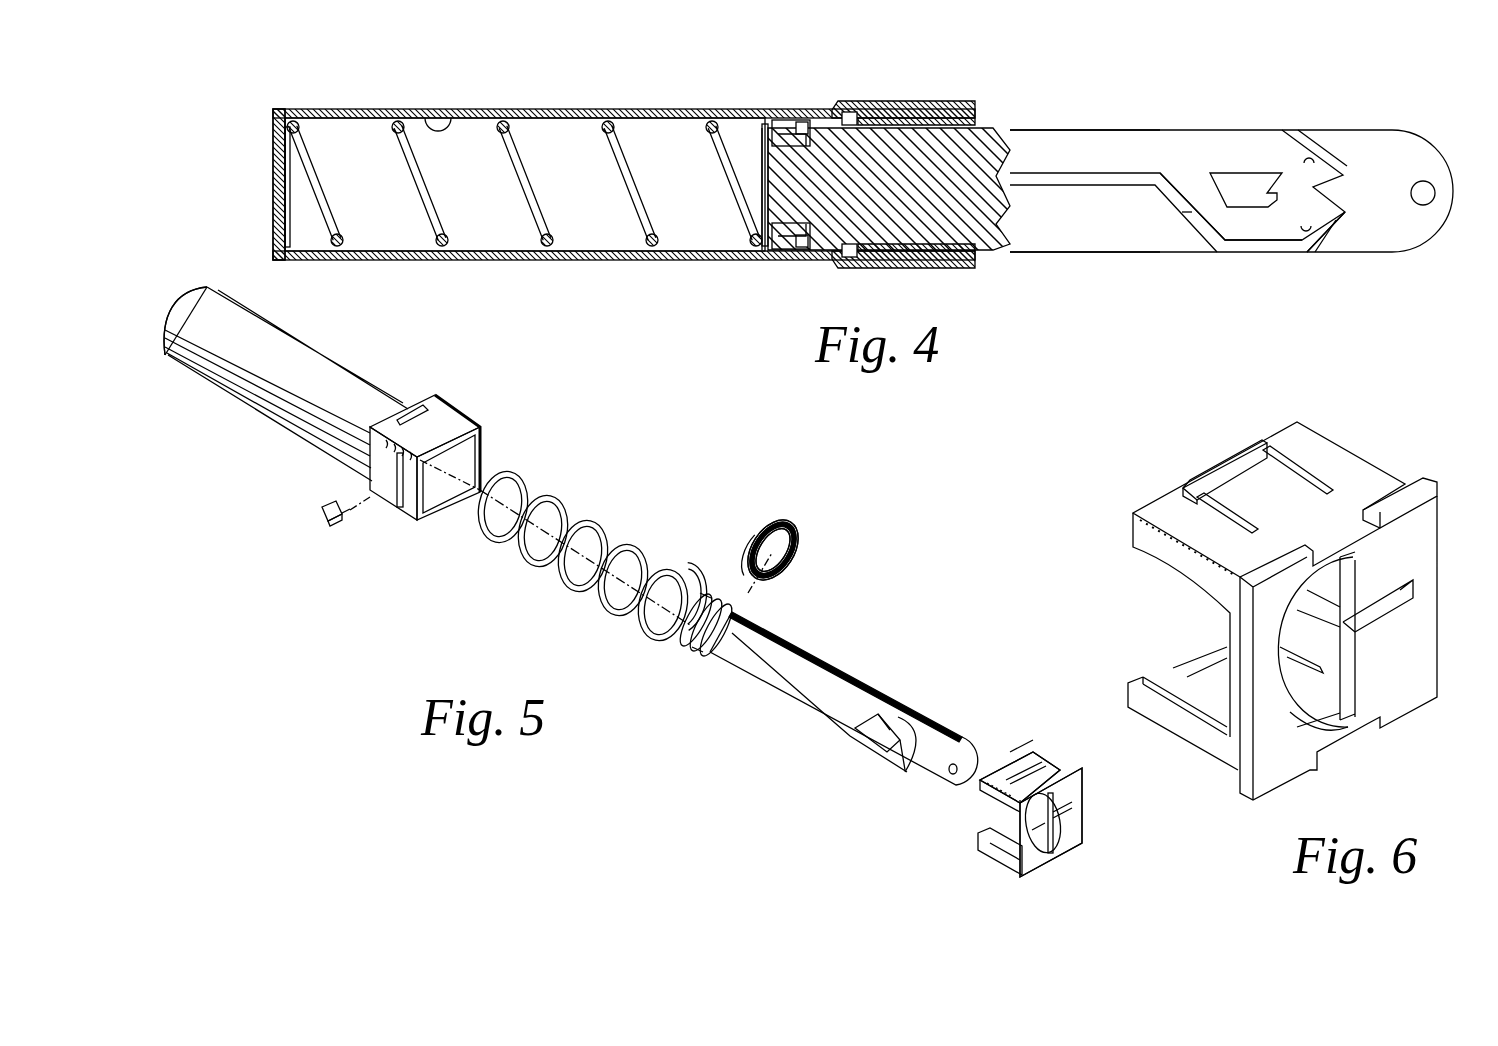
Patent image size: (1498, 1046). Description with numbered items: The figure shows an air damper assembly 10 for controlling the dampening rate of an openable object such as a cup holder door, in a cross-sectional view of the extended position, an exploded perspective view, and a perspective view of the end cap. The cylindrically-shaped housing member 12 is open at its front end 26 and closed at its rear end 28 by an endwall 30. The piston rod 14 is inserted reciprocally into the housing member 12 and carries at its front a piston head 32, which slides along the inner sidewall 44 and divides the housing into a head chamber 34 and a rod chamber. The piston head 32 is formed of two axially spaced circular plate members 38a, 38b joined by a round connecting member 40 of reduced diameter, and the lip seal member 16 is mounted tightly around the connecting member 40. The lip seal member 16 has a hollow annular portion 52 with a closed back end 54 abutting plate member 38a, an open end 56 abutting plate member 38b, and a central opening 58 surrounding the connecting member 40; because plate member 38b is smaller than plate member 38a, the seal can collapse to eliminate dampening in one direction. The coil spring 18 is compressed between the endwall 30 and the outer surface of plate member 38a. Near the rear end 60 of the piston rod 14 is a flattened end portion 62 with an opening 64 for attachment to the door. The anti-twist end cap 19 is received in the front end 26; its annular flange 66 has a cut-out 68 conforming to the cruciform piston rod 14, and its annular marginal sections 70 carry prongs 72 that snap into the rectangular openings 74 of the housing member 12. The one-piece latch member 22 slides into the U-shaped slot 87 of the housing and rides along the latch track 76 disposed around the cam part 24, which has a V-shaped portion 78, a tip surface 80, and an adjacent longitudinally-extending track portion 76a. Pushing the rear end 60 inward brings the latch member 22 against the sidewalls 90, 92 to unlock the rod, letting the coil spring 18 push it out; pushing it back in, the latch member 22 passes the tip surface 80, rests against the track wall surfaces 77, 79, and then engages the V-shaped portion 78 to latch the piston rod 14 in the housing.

In FIG. 4, the air damper assembly 10 is at (634, 84).
In FIG. 5, the air damper assembly 10 is at (628, 450).
In FIG. 4, the cylindrically-shaped housing member 12 is at (483, 110).
In FIG. 5, the cylindrically-shaped housing member 12 is at (305, 345).
In FIG. 4, the piston rod 14 is at (1434, 152).
In FIG. 5, the piston rod 14 is at (857, 673).
In FIG. 4, the lip seal member 16 is at (792, 124).
In FIG. 5, the lip seal member 16 is at (772, 520).
In FIG. 4, the coil spring 18 is at (298, 128).
In FIG. 5, the coil spring 18 is at (553, 490).
In FIG. 5, the anti-twist end cap 19 is at (1082, 810).
In FIG. 6, the anti-twist end cap 19 is at (1420, 436).
In FIG. 5, the latch member 22 is at (320, 521).
In FIG. 4, the cam part 24 is at (1250, 183).
In FIG. 5, the cam part 24 is at (870, 740).
In FIG. 5, the front end 26 is at (437, 513).
In FIG. 5, the rear end 28 is at (168, 288).
In FIG. 4, the endwall 30 is at (275, 185).
In FIG. 5, the endwall 30 is at (167, 337).
In FIG. 5, the piston head 32 is at (714, 572).
In FIG. 4, the head chamber 34 is at (360, 140).
In FIG. 4, the circular plate member 38a is at (775, 122).
In FIG. 5, the circular plate member 38a is at (697, 650).
In FIG. 4, the circular plate member 38b is at (808, 142).
In FIG. 5, the circular plate member 38b is at (707, 670).
In FIG. 4, the connecting member 40 is at (768, 246).
In FIG. 5, the connecting member 40 is at (705, 655).
In FIG. 4, the inner sidewall 44 is at (424, 120).
In FIG. 5, the hollow annular portion 52 is at (796, 543).
In FIG. 5, the closed back end 54 is at (750, 545).
In FIG. 5, the open end 56 is at (774, 578).
In FIG. 5, the central opening 58 is at (786, 565).
In FIG. 5, the rear end 60 is at (913, 795).
In FIG. 5, the flattened end portion 62 is at (953, 782).
In FIG. 5, the opening 64 is at (958, 755).
In FIG. 5, the annular flange 66 is at (1073, 823).
In FIG. 6, the annular flange 66 is at (1422, 540).
In FIG. 5, the cut-out 68 is at (1038, 843).
In FIG. 6, the cut-out 68 is at (1327, 653).
In FIG. 4, the annular marginal sections 70 is at (935, 104).
In FIG. 6, the annular marginal sections 70 is at (1350, 480).
In FIG. 4, the prong 72 is at (868, 108).
In FIG. 5, the prong 72 is at (1012, 757).
In FIG. 6, the prong 72 is at (1230, 475).
In FIG. 4, the opening 74 is at (850, 110).
In FIG. 5, the opening 74 is at (422, 403).
In FIG. 4, the latch track 76 is at (1245, 150).
In FIG. 4, the track portion 76a is at (1093, 140).
In FIG. 4, the track wall surface 77 is at (1327, 175).
In FIG. 4, the V-shaped portion 78 is at (1290, 175).
In FIG. 4, the track wall surface 79 is at (1307, 173).
In FIG. 4, the tip surface 80 is at (1195, 170).
In FIG. 5, the U-shaped slot 87 is at (397, 510).
In FIG. 4, the sidewall 90 is at (1303, 225).
In FIG. 4, the sidewall 92 is at (1312, 228).